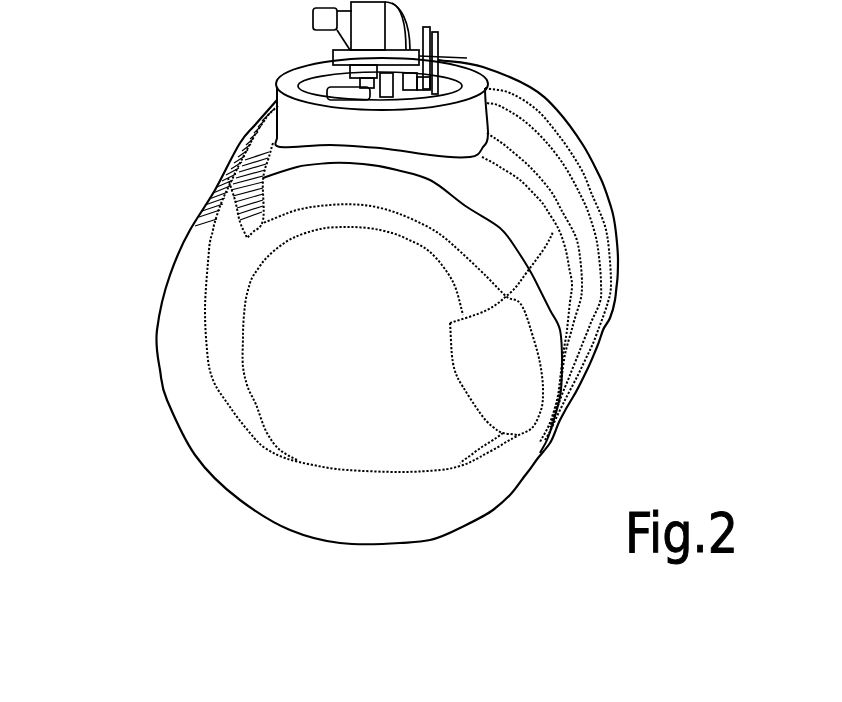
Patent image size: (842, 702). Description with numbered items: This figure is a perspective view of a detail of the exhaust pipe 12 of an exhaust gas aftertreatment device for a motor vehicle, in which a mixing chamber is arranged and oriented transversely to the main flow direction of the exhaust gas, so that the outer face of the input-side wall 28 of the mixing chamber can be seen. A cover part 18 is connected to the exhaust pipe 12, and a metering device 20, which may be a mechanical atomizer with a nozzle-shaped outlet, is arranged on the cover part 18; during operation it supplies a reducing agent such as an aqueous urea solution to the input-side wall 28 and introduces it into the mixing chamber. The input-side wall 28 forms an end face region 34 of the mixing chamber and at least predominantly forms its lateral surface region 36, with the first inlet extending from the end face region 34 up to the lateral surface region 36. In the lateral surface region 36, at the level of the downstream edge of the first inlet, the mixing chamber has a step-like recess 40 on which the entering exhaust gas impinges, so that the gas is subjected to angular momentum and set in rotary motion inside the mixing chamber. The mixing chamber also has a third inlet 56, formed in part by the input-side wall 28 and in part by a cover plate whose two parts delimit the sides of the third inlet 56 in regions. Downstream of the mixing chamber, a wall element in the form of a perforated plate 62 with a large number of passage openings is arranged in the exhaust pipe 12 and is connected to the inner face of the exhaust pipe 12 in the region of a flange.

The exhaust pipe 12 is at (175, 264).
The cover part 18 is at (471, 113).
The metering device 20 is at (306, 50).
The input-side wall 28 is at (256, 309).
The end face region 34 is at (332, 363).
The lateral surface region 36 is at (513, 256).
The recess 40 is at (537, 318).
The third inlet 56 is at (240, 177).
The perforated plate 62 is at (594, 140).